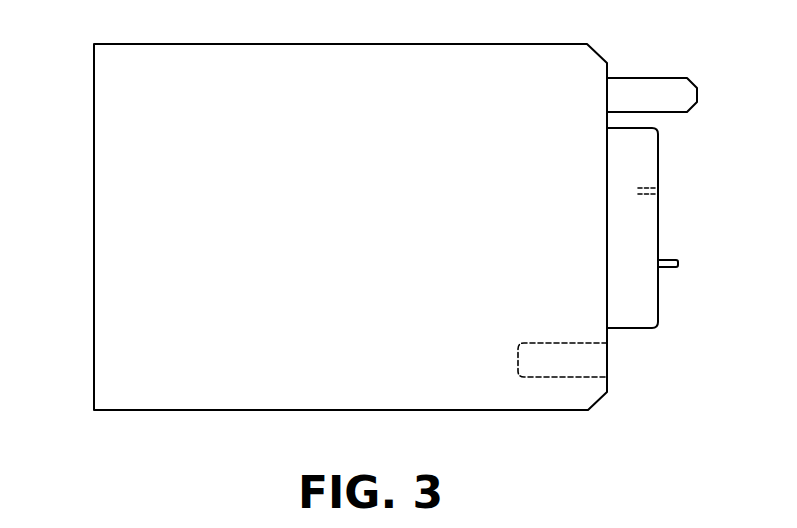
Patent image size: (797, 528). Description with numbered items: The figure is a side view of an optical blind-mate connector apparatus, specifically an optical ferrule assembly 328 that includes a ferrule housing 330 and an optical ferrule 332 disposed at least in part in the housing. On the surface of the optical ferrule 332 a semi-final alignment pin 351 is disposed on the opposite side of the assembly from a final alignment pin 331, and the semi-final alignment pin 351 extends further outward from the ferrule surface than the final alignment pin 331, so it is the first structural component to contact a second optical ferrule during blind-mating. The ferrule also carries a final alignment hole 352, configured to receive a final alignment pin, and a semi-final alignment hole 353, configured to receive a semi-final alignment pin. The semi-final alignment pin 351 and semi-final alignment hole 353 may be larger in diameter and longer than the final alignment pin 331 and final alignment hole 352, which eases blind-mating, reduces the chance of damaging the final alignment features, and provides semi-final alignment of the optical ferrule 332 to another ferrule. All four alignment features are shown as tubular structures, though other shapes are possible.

The optical ferrule assembly 328 is at (80, 182).
The ferrule housing 330 is at (94, 292).
The final alignment pin 331 is at (678, 263).
The optical ferrule 332 is at (658, 228).
The semi-final alignment pin 351 is at (662, 78).
The final alignment hole 352 is at (643, 196).
The semi-final alignment hole 353 is at (580, 378).